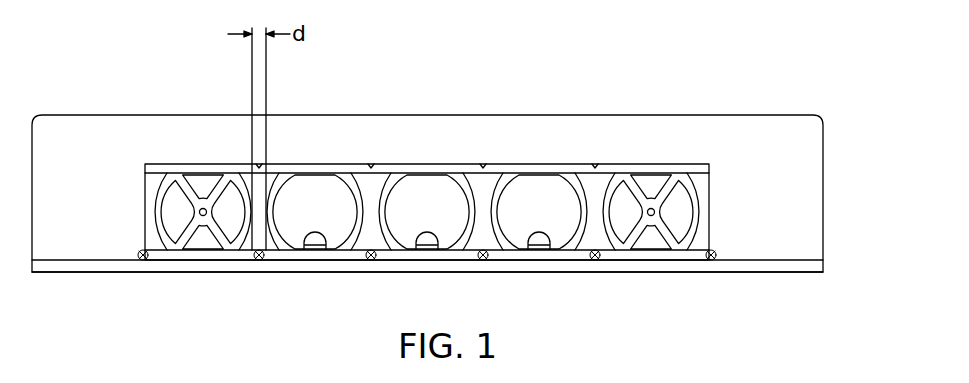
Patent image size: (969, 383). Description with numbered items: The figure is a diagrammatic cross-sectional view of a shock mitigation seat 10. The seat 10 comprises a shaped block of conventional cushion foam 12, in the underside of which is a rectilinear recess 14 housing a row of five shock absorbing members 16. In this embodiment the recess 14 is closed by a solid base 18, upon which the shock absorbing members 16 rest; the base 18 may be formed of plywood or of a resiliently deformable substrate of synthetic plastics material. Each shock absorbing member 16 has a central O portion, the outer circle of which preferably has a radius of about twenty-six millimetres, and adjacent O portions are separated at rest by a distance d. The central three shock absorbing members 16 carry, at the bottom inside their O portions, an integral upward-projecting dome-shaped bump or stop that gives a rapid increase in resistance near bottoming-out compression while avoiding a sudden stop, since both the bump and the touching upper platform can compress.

The shock mitigation seat 10 is at (459, 198).
The cushion foam 12 is at (96, 209).
The rectilinear recess 14 is at (465, 164).
The shock absorbing members 16 is at (618, 164).
The solid base 18 is at (108, 265).